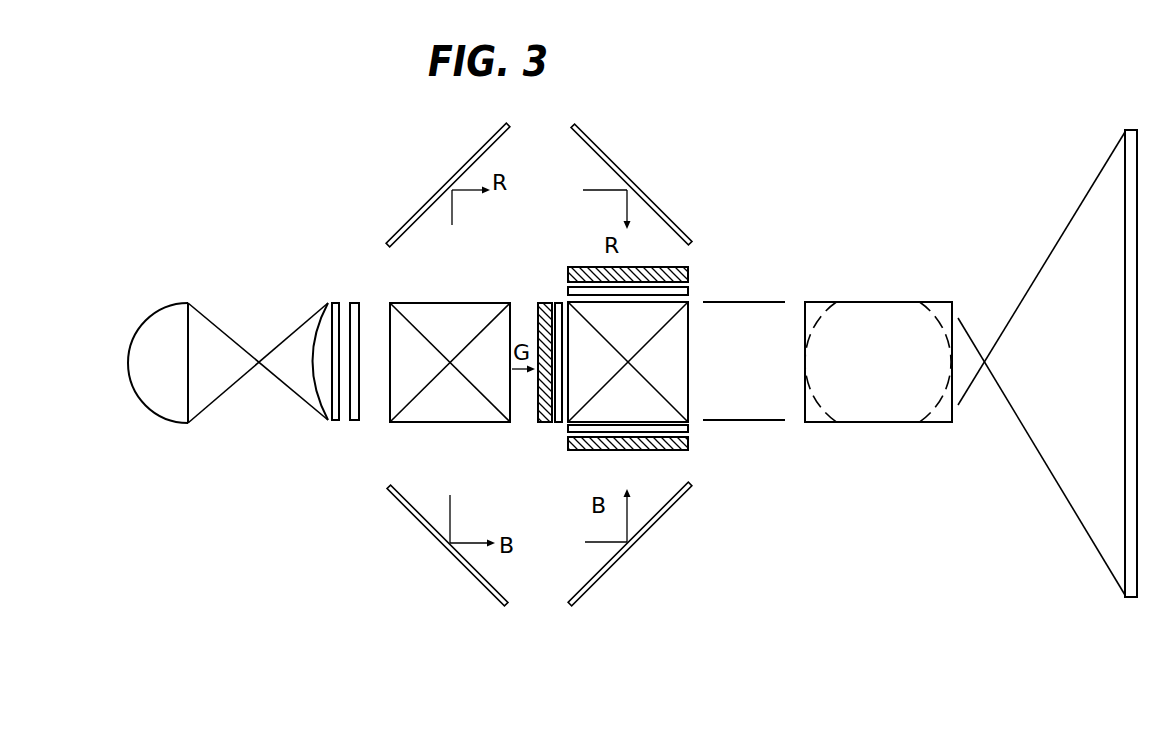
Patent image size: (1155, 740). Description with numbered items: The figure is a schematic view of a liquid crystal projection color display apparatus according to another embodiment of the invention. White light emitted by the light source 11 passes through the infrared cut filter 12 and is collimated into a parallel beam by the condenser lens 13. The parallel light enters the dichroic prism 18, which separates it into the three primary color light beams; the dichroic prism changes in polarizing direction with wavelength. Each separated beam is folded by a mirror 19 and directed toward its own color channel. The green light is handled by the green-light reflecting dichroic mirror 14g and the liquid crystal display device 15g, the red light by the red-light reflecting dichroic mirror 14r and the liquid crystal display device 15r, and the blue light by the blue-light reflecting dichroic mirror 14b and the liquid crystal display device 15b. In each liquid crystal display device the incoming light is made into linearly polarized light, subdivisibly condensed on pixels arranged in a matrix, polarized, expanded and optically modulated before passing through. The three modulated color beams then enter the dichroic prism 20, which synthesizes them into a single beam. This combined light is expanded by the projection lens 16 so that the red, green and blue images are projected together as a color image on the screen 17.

The light source 11 is at (150, 412).
The infrared cut filter 12 is at (328, 418).
The condenser lens 13 is at (353, 424).
The dichroic prism 18 is at (453, 424).
The green-light reflecting dichroic mirror 14g is at (546, 424).
The liquid crystal display device 15g is at (536, 301).
The dichroic prism 20 is at (688, 302).
The red-light reflecting dichroic mirror 14r is at (690, 268).
The liquid crystal display device 15r is at (565, 301).
The blue-light reflecting dichroic mirror 14b is at (680, 447).
The liquid crystal display device 15b is at (700, 432).
The projection lens 16 is at (902, 302).
The screen 17 is at (1130, 600).
The mirror 19 is at (440, 165).